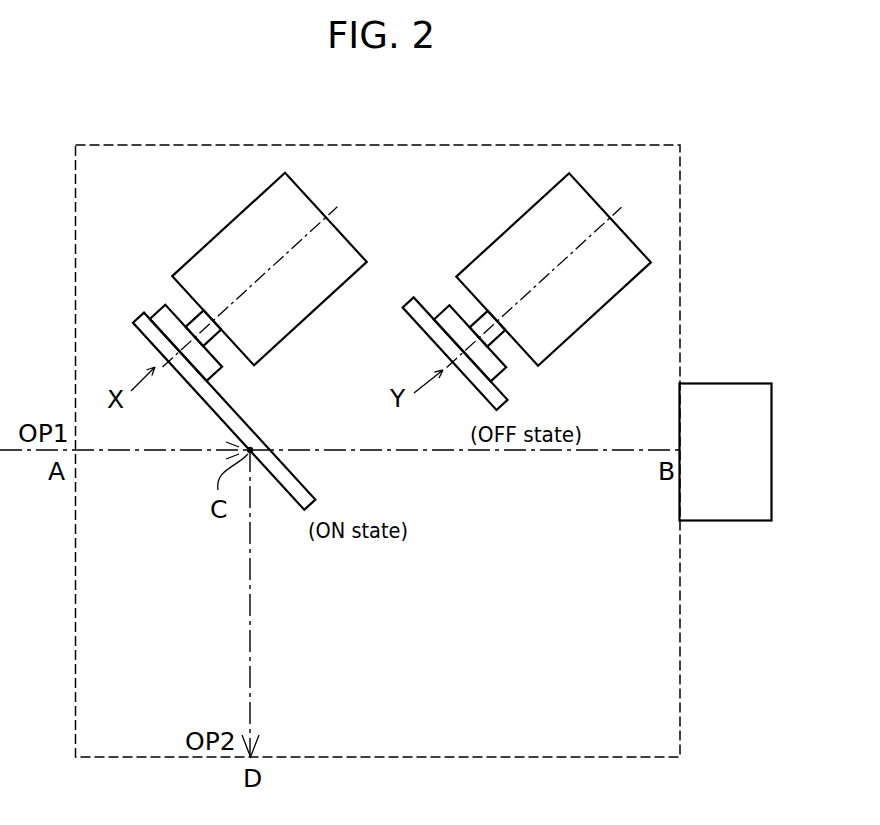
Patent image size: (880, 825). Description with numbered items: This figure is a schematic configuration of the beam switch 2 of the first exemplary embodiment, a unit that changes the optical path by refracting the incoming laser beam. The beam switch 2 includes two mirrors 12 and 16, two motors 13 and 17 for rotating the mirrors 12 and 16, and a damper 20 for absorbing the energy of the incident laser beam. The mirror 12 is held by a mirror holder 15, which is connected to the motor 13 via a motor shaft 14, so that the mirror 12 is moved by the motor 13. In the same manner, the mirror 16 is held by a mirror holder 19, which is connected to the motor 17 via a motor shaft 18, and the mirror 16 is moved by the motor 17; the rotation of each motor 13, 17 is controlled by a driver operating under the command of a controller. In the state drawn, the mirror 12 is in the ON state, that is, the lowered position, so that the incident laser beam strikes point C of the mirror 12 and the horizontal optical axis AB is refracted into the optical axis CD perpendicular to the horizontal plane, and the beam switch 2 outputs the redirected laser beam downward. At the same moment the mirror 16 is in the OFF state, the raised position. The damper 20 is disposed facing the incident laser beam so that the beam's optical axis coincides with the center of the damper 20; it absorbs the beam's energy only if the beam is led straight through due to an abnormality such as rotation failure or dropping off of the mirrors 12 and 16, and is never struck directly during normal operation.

The beam switch 2 is at (320, 145).
The mirror 12 is at (232, 406).
The motor 13 is at (238, 228).
The motor shaft 14 is at (196, 323).
The mirror holder 15 is at (160, 307).
The mirror 16 is at (497, 395).
The motor 17 is at (525, 223).
The motor shaft 18 is at (481, 323).
The mirror holder 19 is at (447, 307).
The damper 20 is at (737, 383).